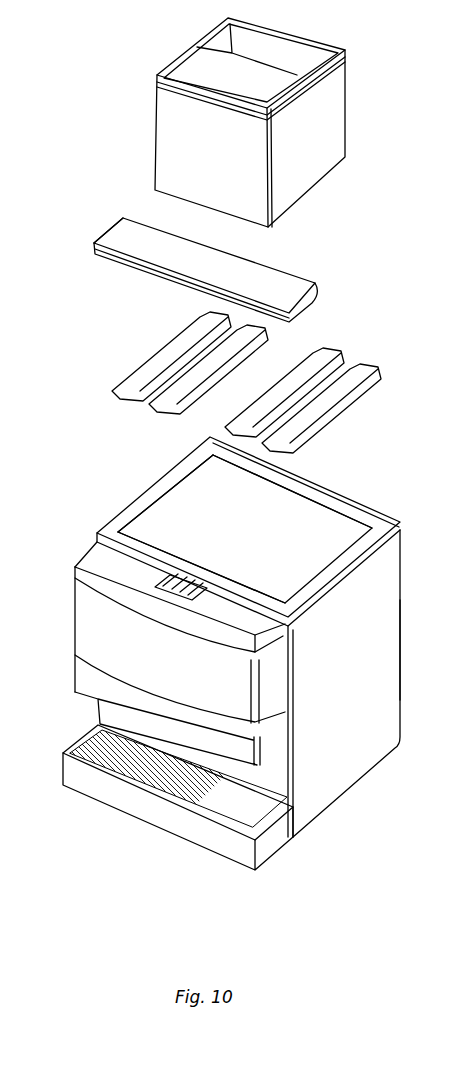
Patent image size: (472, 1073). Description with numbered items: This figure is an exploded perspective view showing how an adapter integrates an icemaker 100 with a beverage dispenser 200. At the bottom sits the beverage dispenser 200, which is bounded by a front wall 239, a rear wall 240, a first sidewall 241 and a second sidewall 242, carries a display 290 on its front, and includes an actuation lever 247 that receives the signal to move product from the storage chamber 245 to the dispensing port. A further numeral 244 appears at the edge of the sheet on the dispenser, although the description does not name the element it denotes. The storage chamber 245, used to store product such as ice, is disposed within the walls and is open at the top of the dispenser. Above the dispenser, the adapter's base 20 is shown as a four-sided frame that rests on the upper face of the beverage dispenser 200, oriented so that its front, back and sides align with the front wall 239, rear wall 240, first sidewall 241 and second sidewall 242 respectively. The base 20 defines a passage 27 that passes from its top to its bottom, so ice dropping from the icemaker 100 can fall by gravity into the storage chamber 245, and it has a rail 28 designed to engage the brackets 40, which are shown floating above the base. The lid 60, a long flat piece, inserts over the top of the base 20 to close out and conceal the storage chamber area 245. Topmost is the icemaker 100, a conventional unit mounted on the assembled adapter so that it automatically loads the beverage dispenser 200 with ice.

The icemaker 100 is at (356, 97).
The lid 60 is at (297, 262).
The brackets 40 is at (210, 347).
The rear wall 240 is at (353, 500).
The base 20 is at (293, 513).
The passage 27 is at (188, 503).
The storage chamber 245 is at (218, 538).
The rail 28 is at (292, 496).
The first sidewall 241 is at (95, 542).
The front wall 239 is at (293, 622).
The display 290 is at (145, 670).
The actuation lever 247 is at (190, 738).
The second sidewall 242 is at (328, 710).
The rear wall 244 is at (436, 652).
The beverage dispenser 200 is at (358, 757).